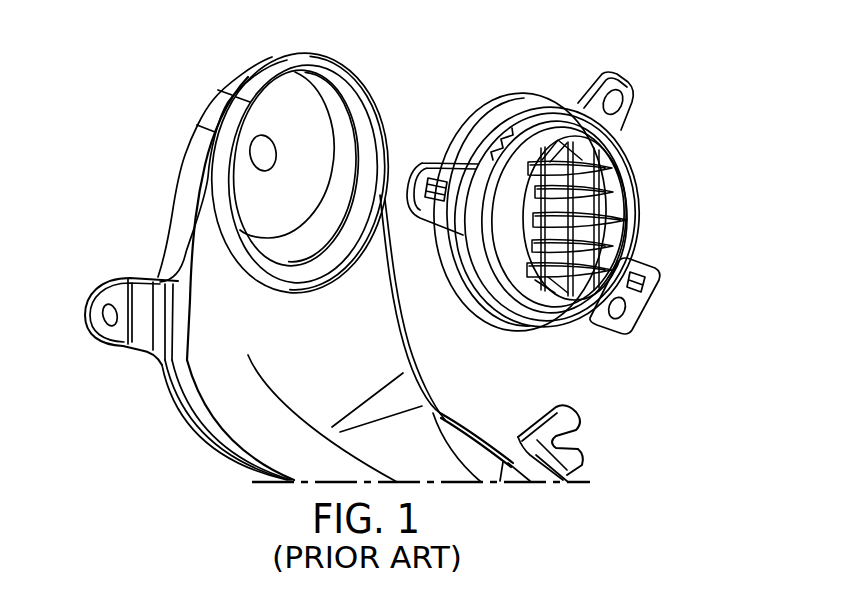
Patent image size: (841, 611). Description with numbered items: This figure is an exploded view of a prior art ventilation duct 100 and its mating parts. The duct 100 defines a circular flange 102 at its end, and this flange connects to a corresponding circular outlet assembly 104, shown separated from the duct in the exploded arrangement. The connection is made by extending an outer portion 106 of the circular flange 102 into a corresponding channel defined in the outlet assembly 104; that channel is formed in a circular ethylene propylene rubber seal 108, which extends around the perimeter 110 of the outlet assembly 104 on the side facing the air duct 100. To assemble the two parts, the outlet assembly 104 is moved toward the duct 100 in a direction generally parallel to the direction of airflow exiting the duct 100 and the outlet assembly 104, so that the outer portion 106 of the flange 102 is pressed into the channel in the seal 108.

The ventilation duct 100 is at (397, 258).
The circular flange 102 is at (337, 258).
The circular outlet assembly 104 is at (578, 213).
The outer portion 106 is at (380, 107).
The circular ethylene propylene rubber seal 108 is at (498, 100).
The perimeter 110 is at (512, 335).